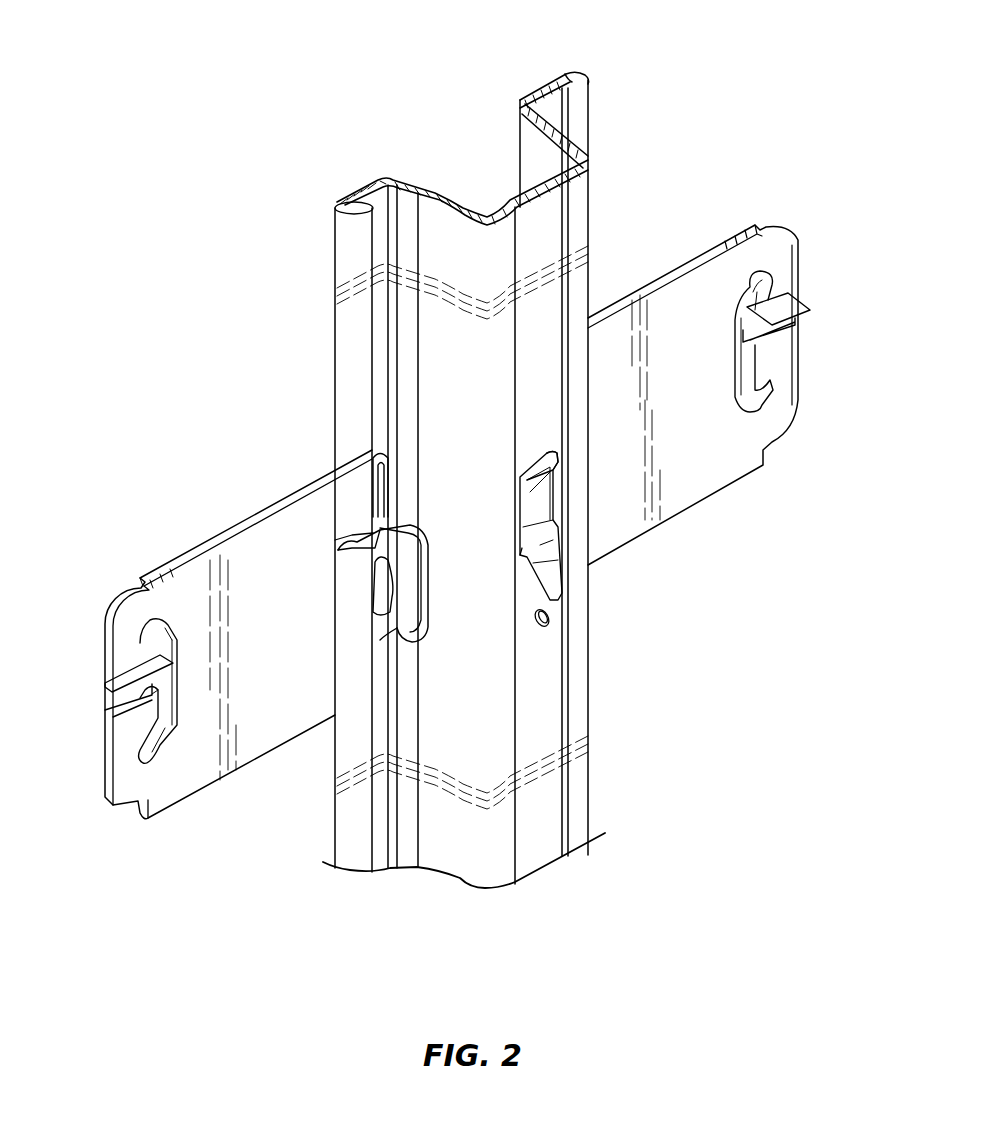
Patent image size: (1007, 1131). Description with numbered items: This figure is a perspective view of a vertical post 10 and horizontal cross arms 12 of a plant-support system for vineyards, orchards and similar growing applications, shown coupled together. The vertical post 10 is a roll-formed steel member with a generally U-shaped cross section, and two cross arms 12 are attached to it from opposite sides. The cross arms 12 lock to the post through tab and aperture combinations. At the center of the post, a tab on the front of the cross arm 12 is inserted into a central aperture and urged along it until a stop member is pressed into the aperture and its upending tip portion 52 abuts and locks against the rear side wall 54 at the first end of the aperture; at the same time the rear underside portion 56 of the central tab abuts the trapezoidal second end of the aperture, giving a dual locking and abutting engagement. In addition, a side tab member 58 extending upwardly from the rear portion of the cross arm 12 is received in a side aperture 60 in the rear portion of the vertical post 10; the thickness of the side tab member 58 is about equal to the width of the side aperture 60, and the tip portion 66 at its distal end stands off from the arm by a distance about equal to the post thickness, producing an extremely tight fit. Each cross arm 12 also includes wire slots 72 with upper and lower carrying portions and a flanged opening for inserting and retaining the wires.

The vertical post 10 is at (560, 72).
The cross arm 12 is at (245, 537).
The upending tip portion 52 is at (575, 487).
The rear side wall 54 is at (588, 450).
The rear underside portion 56 is at (520, 555).
The side tab member 58 is at (402, 540).
The side aperture 60 is at (380, 463).
The tip portion 66 is at (400, 622).
The wire slot 72 is at (155, 634).